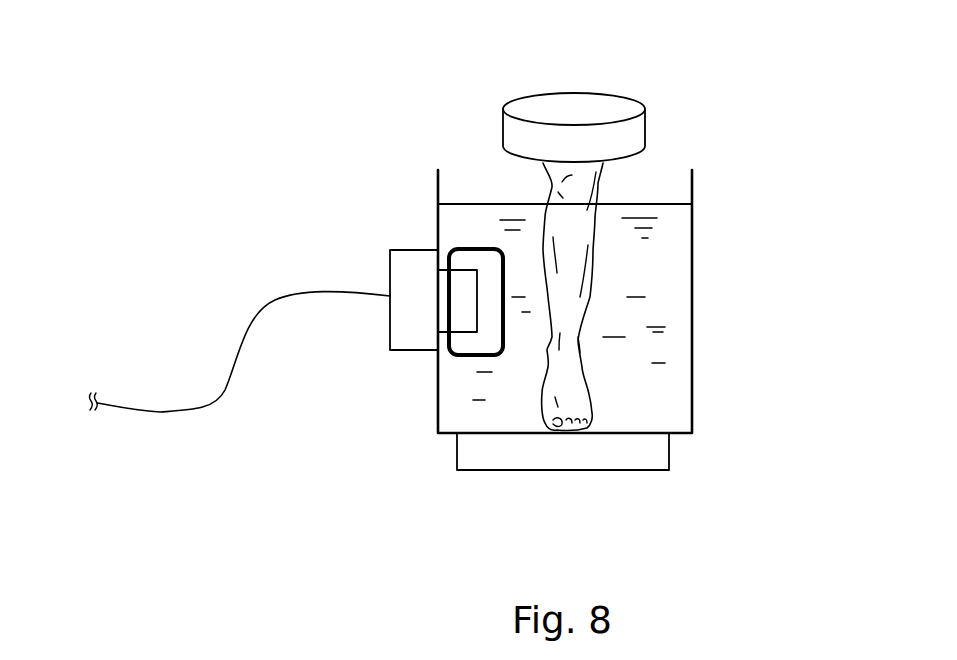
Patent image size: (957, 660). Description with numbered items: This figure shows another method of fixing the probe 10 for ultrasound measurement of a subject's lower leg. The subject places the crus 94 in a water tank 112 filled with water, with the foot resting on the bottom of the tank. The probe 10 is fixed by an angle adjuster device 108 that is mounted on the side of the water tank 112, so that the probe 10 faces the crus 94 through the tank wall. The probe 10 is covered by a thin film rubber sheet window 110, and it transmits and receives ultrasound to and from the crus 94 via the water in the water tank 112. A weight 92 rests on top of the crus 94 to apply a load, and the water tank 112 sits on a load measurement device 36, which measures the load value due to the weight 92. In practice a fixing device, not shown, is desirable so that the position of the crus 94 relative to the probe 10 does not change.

The probe 10 is at (452, 317).
The load measurement device 36 is at (512, 470).
The weight 92 is at (608, 97).
The crus 94 is at (598, 242).
The angle adjuster device 108 is at (380, 242).
The thin film rubber sheet window 110 is at (478, 247).
The water tank 112 is at (691, 363).